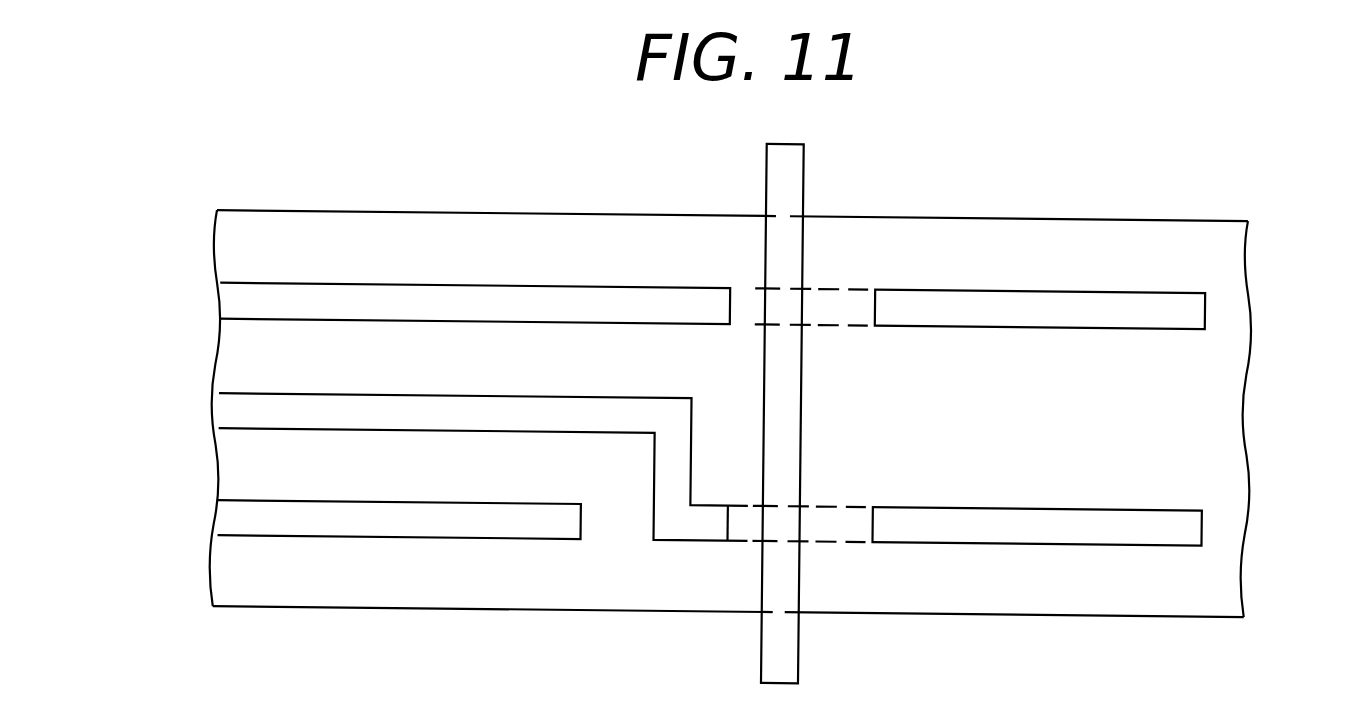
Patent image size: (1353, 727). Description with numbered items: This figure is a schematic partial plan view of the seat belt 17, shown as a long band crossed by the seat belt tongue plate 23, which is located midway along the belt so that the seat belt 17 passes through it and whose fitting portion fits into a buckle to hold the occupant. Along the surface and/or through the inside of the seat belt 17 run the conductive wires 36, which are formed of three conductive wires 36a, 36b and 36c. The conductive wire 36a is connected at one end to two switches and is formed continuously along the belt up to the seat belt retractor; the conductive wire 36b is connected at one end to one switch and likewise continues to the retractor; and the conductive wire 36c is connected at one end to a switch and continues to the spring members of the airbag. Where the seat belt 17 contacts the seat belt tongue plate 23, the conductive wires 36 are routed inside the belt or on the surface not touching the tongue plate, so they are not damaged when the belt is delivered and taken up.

The seat belt 17 is at (918, 597).
The seat belt tongue plate 23 is at (796, 166).
The conductive wires 36 is at (122, 343).
The conductive wire 36a is at (233, 300).
The conductive wire 36b is at (238, 410).
The conductive wire 36c is at (230, 512).